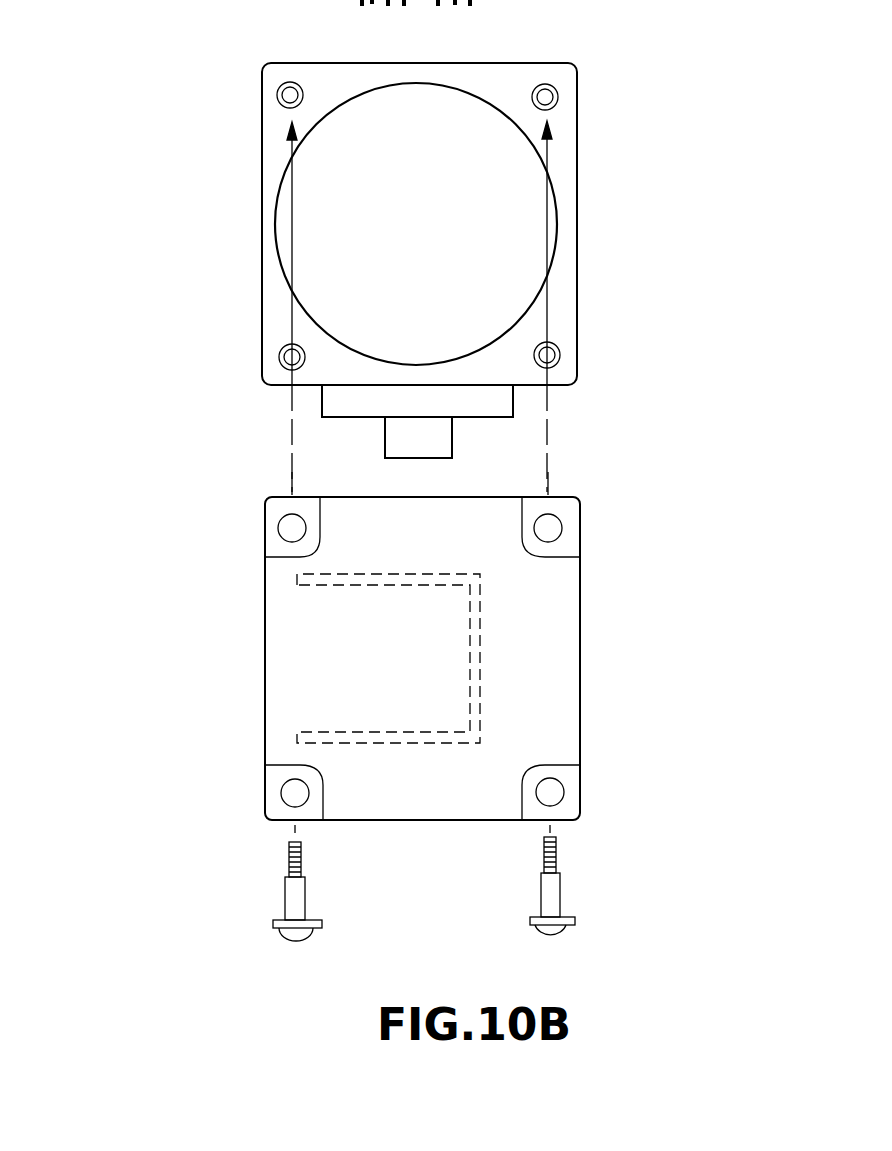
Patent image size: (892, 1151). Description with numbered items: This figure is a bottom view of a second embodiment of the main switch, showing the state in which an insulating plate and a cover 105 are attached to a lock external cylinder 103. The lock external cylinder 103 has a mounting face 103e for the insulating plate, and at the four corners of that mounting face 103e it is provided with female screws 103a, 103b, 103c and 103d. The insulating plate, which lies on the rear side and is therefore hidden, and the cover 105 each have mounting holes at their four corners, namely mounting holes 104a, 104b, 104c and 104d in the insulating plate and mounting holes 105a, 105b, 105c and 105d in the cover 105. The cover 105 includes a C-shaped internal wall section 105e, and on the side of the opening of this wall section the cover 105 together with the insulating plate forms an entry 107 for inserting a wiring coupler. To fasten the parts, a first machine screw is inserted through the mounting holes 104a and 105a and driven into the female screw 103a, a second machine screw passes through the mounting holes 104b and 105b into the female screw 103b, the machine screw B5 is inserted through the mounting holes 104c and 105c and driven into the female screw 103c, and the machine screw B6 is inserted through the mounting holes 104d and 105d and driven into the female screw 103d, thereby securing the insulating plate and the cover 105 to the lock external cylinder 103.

The lock external cylinder 103 is at (428, 250).
The female screw 103a is at (280, 88).
The female screw 103b is at (556, 92).
The female screw 103c is at (558, 350).
The female screw 103d is at (282, 352).
The mounting face 103e is at (270, 152).
The mounting hole 104a is at (174, 510).
The mounting hole 104b is at (645, 514).
The mounting hole 104c is at (649, 779).
The mounting hole 104d is at (176, 780).
The cover 105 is at (420, 658).
The mounting hole 105a is at (300, 526).
The mounting hole 105b is at (562, 530).
The mounting hole 105c is at (564, 792).
The mounting hole 105d is at (305, 787).
The C-shaped internal wall section 105e is at (483, 663).
The entry 107 is at (405, 658).
The machine screw B5 is at (562, 890).
The machine screw B6 is at (287, 888).